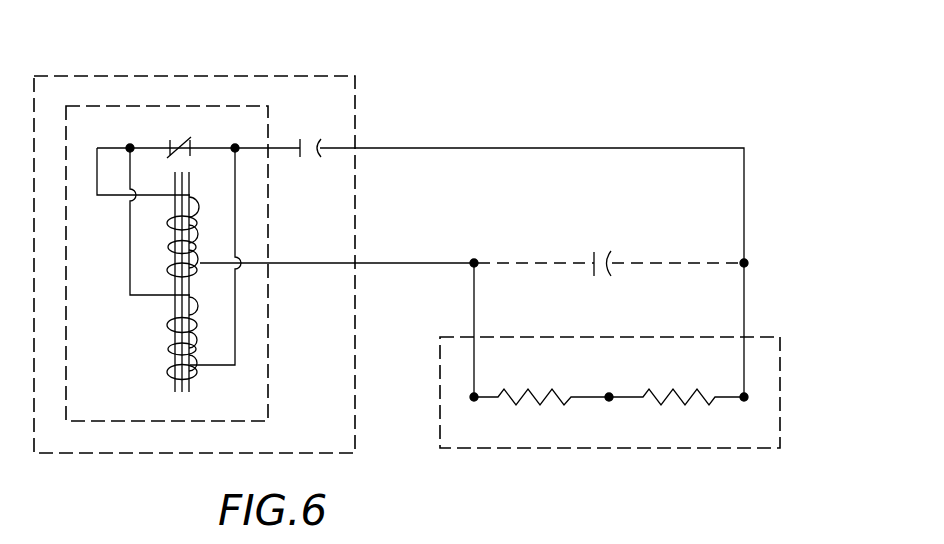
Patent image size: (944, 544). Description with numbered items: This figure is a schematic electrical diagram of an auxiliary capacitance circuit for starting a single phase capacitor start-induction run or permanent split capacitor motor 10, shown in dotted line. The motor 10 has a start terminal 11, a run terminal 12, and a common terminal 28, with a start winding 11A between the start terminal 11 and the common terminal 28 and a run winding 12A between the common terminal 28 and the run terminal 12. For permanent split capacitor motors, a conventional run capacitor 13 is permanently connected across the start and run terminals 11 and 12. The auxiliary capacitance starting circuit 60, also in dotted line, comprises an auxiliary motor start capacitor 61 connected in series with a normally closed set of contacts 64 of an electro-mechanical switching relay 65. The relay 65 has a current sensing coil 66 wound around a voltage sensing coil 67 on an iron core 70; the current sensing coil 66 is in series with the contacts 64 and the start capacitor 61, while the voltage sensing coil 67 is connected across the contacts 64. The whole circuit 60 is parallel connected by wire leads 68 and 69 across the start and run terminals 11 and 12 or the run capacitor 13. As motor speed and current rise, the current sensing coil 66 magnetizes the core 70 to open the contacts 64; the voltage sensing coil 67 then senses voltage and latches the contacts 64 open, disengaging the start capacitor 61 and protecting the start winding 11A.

The motor 10 is at (788, 342).
The start terminal 11 is at (475, 403).
The motor start winding 11A is at (550, 405).
The run terminal 12 is at (742, 403).
The run winding 12A is at (699, 405).
The run capacitor 13 is at (606, 252).
The common terminal 28 is at (612, 403).
The auxiliary capacitance starting circuit 60 is at (356, 88).
The auxiliary motor start capacitor 61 is at (308, 138).
The normally closed contacts 64 is at (170, 142).
The electro-mechanical switching relay 65 is at (270, 384).
The current sensing coil 66 is at (197, 232).
The voltage sensing coil 67 is at (168, 347).
The wire lead 68 is at (400, 263).
The wire lead 69 is at (546, 148).
The iron core 70 is at (174, 388).